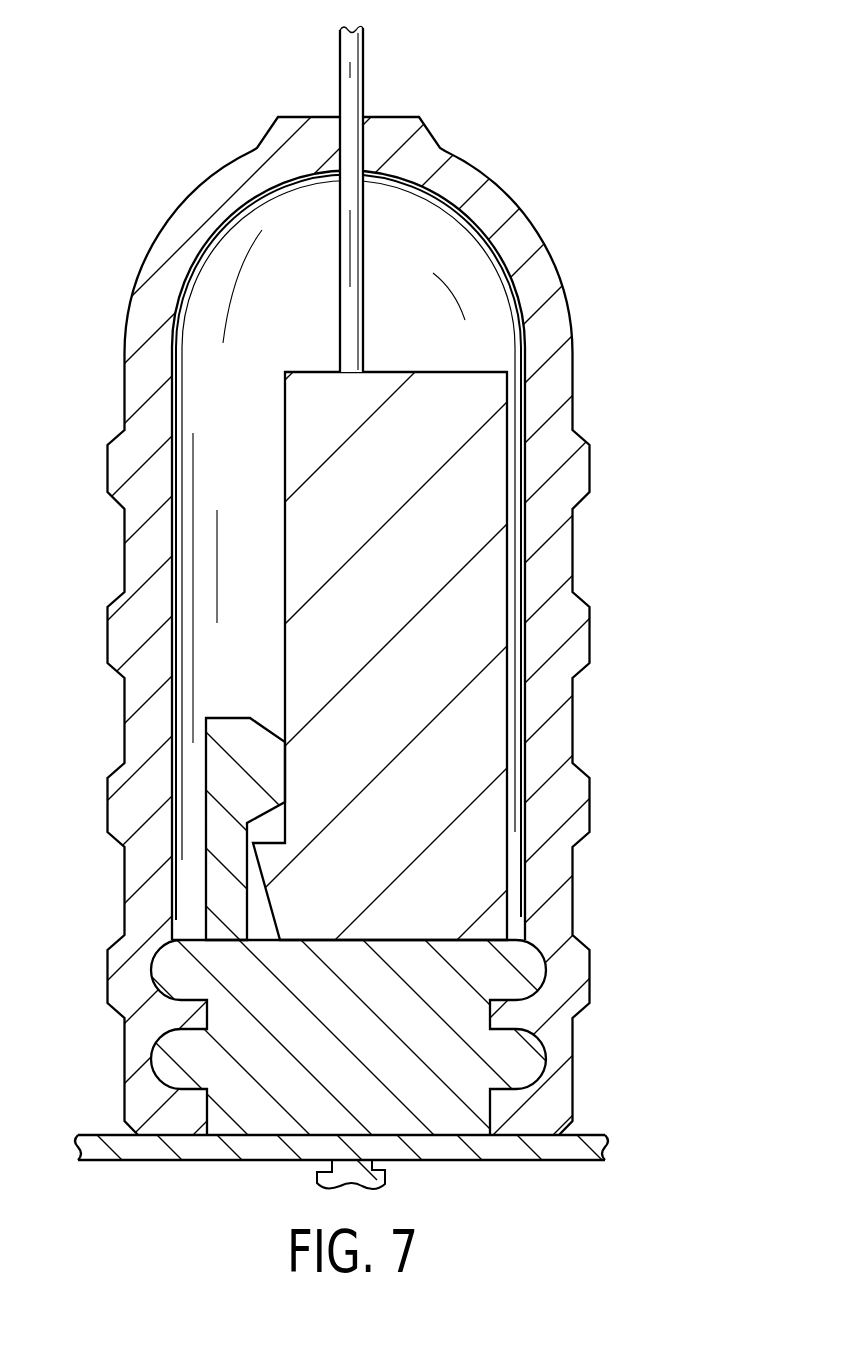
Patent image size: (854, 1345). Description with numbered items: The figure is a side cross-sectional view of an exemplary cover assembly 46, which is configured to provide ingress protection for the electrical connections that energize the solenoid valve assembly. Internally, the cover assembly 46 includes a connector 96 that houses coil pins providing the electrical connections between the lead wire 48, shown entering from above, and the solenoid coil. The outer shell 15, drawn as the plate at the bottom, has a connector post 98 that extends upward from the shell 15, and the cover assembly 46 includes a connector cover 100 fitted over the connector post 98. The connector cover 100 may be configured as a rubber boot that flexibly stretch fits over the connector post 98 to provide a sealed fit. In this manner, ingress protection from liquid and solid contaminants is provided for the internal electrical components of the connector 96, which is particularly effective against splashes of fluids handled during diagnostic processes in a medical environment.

The outer shell 15 is at (101, 1162).
The cover assembly 46 is at (614, 117).
The lead wire 48 is at (364, 67).
The connector 96 is at (497, 461).
The connector post 98 is at (524, 1056).
The connector cover 100 is at (150, 263).